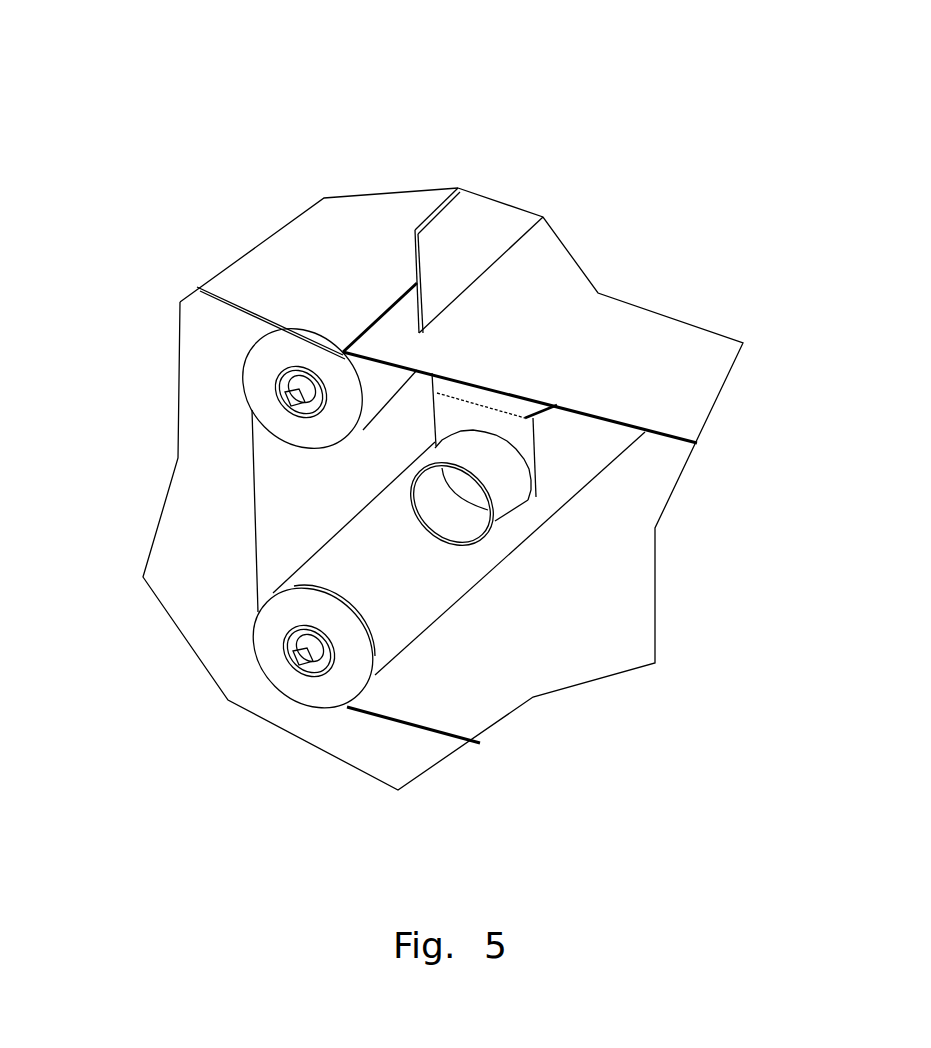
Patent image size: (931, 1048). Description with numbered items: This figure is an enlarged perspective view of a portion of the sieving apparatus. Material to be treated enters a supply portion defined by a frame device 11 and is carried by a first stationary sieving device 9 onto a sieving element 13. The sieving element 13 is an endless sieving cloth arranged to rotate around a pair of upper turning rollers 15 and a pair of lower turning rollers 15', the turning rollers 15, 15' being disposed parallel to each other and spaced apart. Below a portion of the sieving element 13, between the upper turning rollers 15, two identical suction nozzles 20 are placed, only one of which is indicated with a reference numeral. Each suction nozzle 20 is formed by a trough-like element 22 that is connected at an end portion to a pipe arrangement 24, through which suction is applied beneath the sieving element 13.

The first stationary sieving device 9 is at (295, 277).
The frame device 11 is at (443, 253).
The sieving element 13 is at (648, 353).
The upper turning rollers 15 is at (214, 388).
The lower turning rollers 15' is at (219, 648).
The suction nozzle 20 is at (603, 570).
The trough-like element 22 is at (573, 443).
The pipe arrangement 24 is at (445, 522).